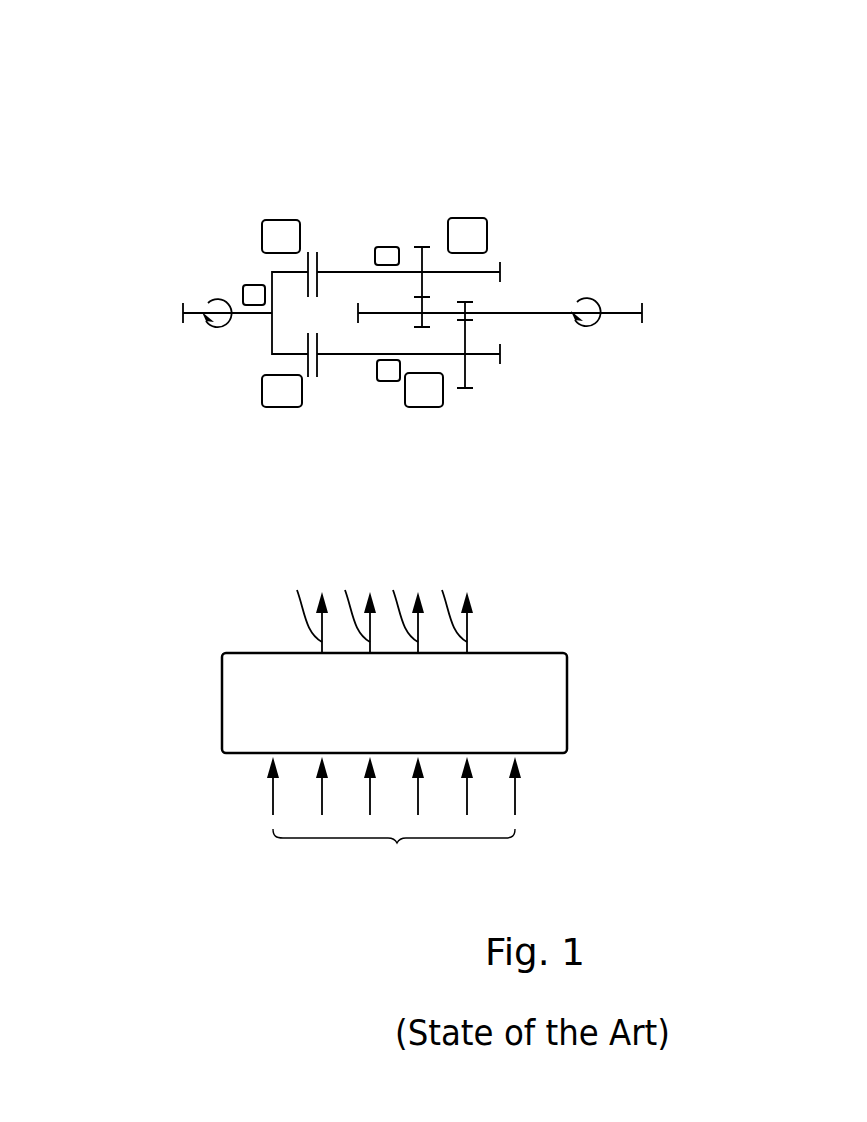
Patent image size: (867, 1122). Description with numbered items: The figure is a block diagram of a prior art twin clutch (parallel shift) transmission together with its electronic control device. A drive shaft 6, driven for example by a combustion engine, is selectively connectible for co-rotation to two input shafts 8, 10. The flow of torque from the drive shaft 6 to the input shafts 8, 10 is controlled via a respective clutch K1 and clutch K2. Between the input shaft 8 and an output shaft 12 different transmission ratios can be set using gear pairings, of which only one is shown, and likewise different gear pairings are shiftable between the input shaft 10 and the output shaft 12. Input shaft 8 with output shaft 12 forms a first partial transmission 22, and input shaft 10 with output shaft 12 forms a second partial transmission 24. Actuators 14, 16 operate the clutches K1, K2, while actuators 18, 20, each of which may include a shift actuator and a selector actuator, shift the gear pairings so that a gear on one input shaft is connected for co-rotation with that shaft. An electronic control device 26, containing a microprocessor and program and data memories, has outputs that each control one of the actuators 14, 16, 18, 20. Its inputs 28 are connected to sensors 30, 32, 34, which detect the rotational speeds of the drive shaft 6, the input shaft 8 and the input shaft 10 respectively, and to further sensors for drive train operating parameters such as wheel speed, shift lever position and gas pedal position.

The drive shaft 6 is at (184, 323).
The input shaft 8 is at (352, 272).
The input shaft 10 is at (355, 354).
The output shaft 12 is at (535, 312).
The actuator 14 is at (275, 222).
The actuator 16 is at (267, 390).
The actuator 18 is at (465, 218).
The actuator 20 is at (440, 395).
The partial transmission 22 is at (525, 244).
The partial transmission 24 is at (530, 349).
The electronic control device 26 is at (408, 716).
The inputs 28 is at (394, 832).
The sensor 30 is at (253, 290).
The sensor 32 is at (387, 247).
The sensor 34 is at (384, 372).
The clutch K1 is at (318, 262).
The clutch K2 is at (320, 365).